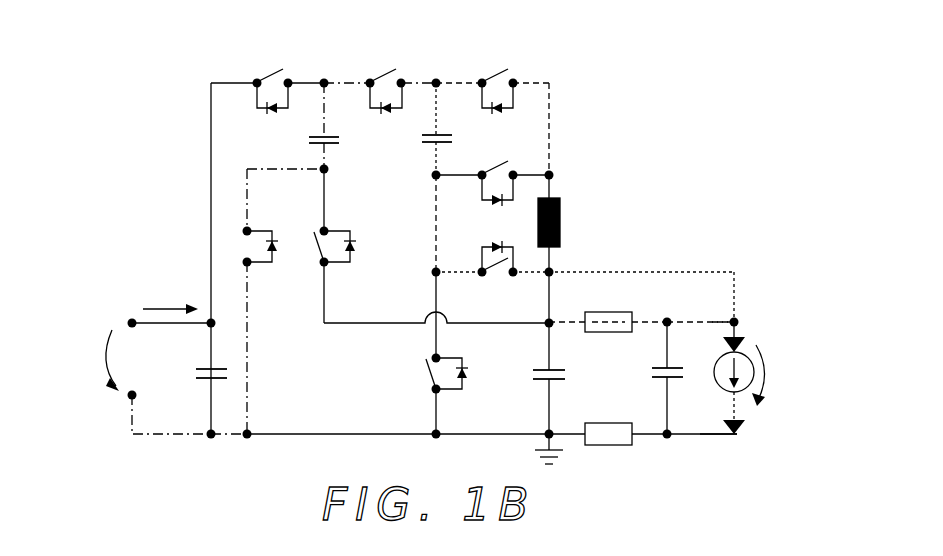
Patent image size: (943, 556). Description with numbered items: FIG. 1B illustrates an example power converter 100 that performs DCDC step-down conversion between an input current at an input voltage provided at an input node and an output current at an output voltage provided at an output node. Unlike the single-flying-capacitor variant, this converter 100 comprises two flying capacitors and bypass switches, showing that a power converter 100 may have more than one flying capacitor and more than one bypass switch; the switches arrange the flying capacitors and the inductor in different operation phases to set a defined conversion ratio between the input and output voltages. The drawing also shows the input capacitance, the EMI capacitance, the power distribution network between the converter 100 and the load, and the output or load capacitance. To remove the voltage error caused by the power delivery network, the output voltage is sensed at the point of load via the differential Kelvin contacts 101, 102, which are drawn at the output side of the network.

The power converter 100 is at (104, 140).
The differential Kelvin contact 101 is at (704, 434).
The differential Kelvin contact 102 is at (712, 322).